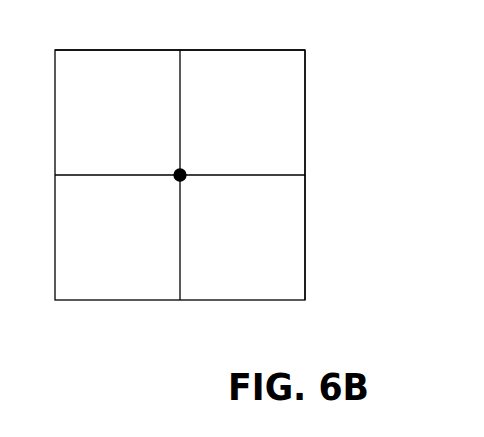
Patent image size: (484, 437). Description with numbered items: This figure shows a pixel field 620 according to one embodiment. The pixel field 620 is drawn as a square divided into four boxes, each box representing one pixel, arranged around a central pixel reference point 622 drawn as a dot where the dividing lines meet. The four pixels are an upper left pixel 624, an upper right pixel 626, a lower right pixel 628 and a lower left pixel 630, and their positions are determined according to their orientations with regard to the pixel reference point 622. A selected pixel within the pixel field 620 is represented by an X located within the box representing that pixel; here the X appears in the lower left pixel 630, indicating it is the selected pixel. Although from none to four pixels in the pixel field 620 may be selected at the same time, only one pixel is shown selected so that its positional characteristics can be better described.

The pixel field 620 is at (177, 322).
The pixel reference point 622 is at (293, 114).
The upper left pixel 624 is at (180, 30).
The upper right pixel 626 is at (359, 112).
The lower right pixel 628 is at (359, 237).
The lower left pixel 630 is at (86, 264).